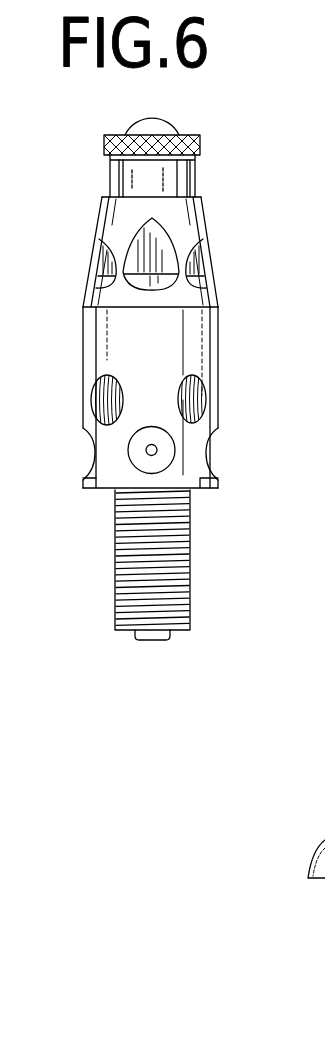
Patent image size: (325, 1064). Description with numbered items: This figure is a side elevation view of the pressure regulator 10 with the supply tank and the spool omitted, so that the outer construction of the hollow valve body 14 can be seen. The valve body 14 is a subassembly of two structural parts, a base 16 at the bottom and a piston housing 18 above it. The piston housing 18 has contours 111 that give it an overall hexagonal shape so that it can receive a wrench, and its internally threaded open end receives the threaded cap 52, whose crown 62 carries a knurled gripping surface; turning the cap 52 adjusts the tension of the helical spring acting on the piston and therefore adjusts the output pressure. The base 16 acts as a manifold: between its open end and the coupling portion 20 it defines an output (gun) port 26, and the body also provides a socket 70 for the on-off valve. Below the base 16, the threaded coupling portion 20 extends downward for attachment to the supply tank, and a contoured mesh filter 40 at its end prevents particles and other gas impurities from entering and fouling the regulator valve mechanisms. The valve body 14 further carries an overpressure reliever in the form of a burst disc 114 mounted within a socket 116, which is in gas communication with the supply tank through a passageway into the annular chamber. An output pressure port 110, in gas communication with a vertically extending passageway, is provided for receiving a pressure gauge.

The pressure regulator 10 is at (77, 132).
The crown 62 is at (197, 137).
The threaded cap 52 is at (181, 180).
The piston housing 18 is at (187, 221).
The contours 111 is at (143, 257).
The valve body 14 is at (231, 311).
The output pressure port 110 is at (88, 378).
The output (gun) port 26 is at (204, 397).
The socket 70 is at (93, 457).
The base 16 is at (216, 481).
The burst disc 114 is at (147, 452).
The socket 116 is at (143, 463).
The coupling portion 20 is at (165, 578).
The contoured mesh filter 40 is at (161, 640).